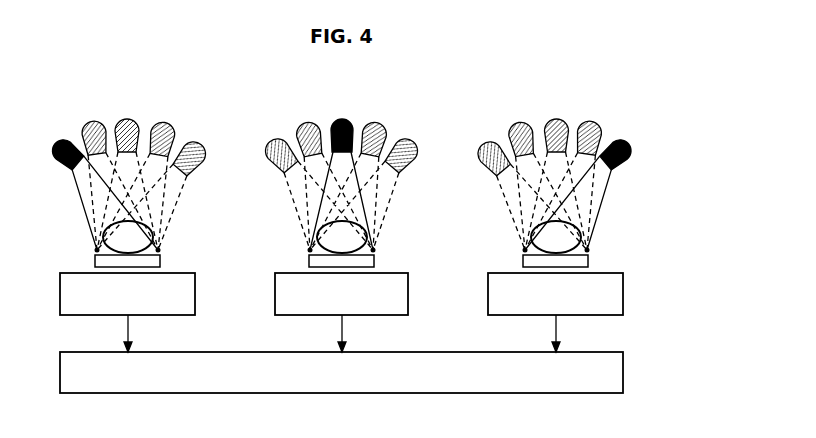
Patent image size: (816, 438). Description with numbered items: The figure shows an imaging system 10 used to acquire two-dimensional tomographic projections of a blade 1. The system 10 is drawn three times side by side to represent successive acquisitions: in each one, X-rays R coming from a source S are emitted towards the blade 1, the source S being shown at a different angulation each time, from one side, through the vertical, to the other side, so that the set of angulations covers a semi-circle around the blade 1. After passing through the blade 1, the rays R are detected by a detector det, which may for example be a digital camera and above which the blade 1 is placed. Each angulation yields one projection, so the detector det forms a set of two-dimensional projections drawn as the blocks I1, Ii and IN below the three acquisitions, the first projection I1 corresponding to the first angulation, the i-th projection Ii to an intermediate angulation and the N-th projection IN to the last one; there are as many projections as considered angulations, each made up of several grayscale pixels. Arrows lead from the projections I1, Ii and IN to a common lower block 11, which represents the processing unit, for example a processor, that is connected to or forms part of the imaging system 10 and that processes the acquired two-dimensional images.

The blade 1 is at (134, 244).
The imaging system 10 is at (218, 191).
The processing unit 11 is at (350, 381).
The source S is at (57, 137).
The X-rays R is at (84, 212).
The detector det is at (161, 261).
The first 2D projection I1 is at (136, 306).
The i-th 2D projection Ii is at (349, 306).
The N-th 2D projection IN is at (565, 306).